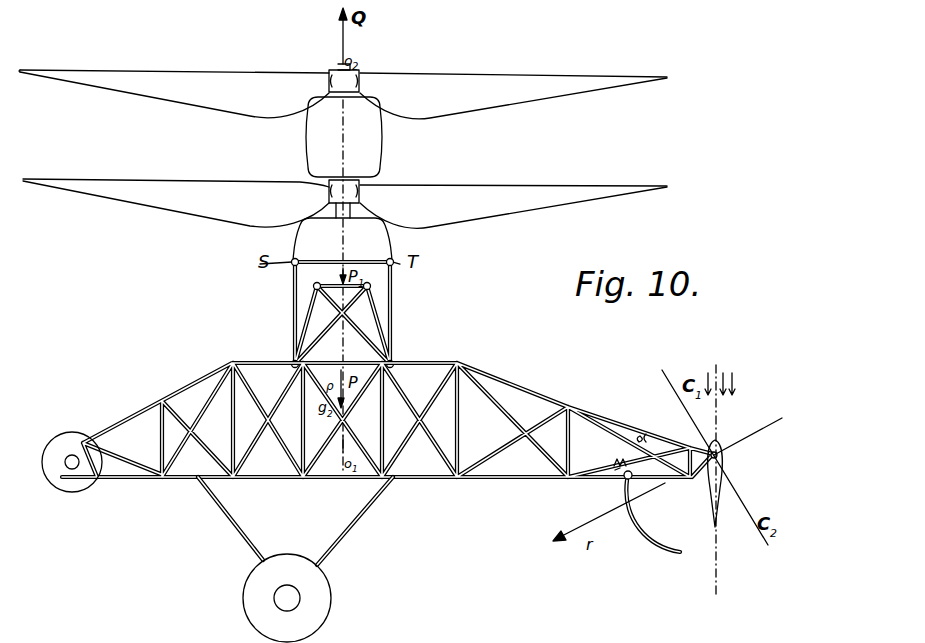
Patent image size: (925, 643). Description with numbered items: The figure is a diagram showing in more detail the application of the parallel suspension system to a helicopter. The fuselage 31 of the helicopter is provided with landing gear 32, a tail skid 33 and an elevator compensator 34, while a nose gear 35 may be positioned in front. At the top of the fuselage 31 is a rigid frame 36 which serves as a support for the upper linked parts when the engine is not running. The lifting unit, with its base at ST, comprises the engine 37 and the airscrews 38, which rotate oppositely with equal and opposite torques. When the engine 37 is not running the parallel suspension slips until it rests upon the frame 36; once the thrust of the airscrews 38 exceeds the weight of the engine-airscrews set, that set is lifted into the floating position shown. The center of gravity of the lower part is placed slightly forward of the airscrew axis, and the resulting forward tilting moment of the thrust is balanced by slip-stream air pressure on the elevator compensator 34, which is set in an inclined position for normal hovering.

The fuselage 31 is at (205, 380).
The landing gear 32 is at (323, 570).
The tail skid 33 is at (655, 548).
The elevator compensator 34 is at (718, 457).
The nose gear 35 is at (70, 492).
The rigid frame 36 is at (378, 308).
The engine 37 is at (365, 137).
The airscrews 38 is at (167, 87).